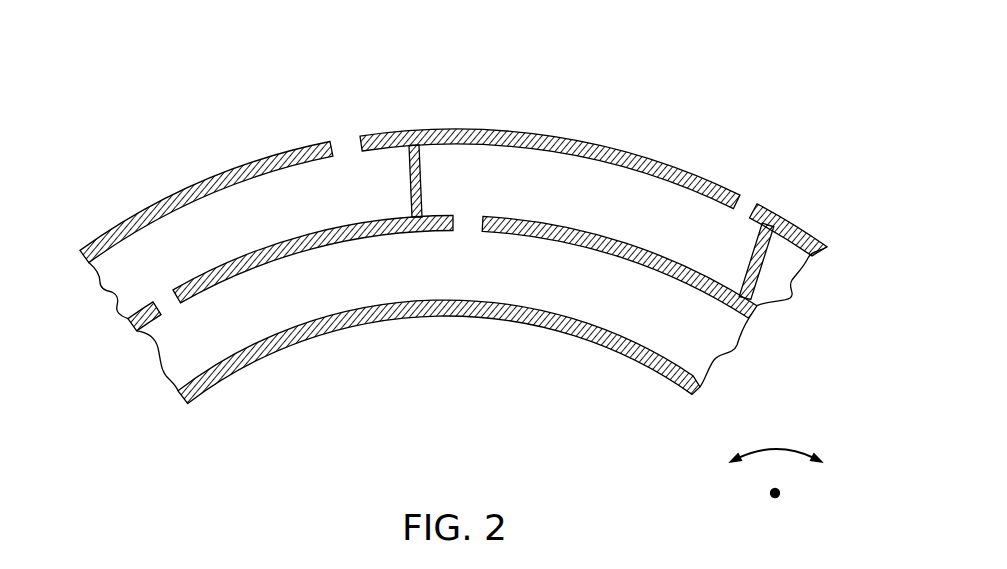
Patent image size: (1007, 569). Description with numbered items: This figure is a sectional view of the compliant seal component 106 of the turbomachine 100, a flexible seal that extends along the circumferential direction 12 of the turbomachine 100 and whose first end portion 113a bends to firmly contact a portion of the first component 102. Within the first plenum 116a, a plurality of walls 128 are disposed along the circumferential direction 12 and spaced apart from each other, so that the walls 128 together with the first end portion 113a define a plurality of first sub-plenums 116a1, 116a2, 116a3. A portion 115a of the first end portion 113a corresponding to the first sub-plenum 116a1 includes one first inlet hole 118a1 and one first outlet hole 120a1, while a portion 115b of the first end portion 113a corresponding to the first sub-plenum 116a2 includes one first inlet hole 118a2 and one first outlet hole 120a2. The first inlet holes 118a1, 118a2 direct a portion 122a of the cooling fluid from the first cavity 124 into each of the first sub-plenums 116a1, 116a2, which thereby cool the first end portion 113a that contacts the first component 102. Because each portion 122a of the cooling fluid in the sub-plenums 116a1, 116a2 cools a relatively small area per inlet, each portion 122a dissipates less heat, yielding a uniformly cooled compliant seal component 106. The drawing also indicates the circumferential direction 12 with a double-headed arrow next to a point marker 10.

The turbomachine 100 is at (732, 31).
The first component 102 is at (148, 386).
The compliant seal component 106 is at (90, 302).
The circumferential direction 10 is at (780, 440).
The circumferential direction 12 is at (780, 493).
The first end portion 113a is at (611, 127).
The portion of the first end portion 115a is at (137, 212).
The portion of the first end portion 115b is at (552, 133).
The first plenum 116a is at (130, 253).
The first sub-plenum 116a1 is at (316, 212).
The first sub-plenum 116a2 is at (636, 222).
The first sub-plenum 116a3 is at (772, 272).
The first inlet hole 118a1 is at (330, 140).
The first inlet hole 118a2 is at (748, 198).
The first outlet hole 120a1 is at (160, 323).
The first outlet hole 120a2 is at (480, 233).
The portion of the cooling fluid 122a is at (333, 172).
The first cavity 124 is at (458, 111).
The walls 128 is at (407, 165).